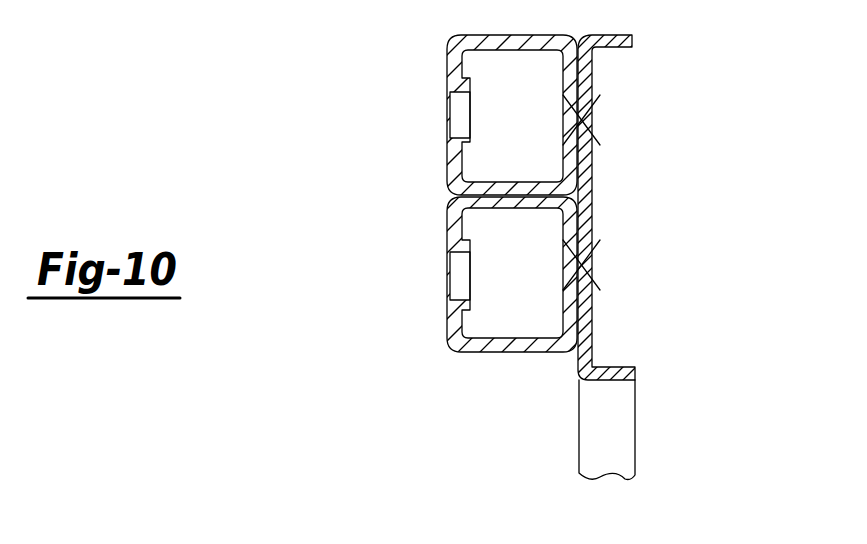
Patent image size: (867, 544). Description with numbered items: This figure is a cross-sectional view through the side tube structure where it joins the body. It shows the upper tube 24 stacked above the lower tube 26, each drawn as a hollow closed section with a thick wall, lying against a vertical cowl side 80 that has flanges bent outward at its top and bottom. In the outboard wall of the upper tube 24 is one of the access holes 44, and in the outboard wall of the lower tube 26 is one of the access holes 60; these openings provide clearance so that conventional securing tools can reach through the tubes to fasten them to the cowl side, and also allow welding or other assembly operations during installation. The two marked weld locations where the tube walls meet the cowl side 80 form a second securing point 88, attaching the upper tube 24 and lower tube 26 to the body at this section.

The lower tube 26 is at (398, 83).
The upper tube 24 is at (398, 321).
The access holes 44 is at (446, 115).
The access holes 60 is at (446, 276).
The cowl side 80 is at (614, 364).
The second securing point 88 is at (579, 120).